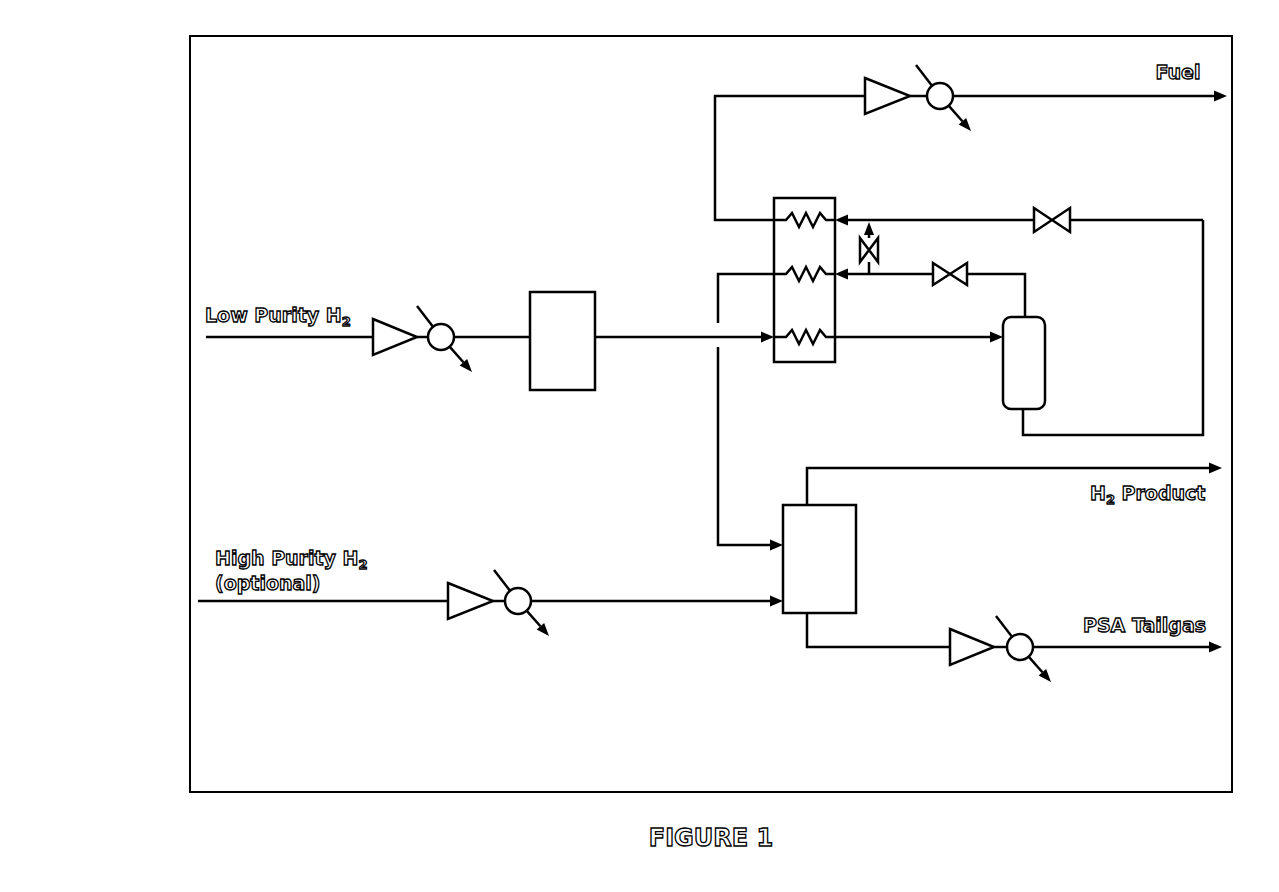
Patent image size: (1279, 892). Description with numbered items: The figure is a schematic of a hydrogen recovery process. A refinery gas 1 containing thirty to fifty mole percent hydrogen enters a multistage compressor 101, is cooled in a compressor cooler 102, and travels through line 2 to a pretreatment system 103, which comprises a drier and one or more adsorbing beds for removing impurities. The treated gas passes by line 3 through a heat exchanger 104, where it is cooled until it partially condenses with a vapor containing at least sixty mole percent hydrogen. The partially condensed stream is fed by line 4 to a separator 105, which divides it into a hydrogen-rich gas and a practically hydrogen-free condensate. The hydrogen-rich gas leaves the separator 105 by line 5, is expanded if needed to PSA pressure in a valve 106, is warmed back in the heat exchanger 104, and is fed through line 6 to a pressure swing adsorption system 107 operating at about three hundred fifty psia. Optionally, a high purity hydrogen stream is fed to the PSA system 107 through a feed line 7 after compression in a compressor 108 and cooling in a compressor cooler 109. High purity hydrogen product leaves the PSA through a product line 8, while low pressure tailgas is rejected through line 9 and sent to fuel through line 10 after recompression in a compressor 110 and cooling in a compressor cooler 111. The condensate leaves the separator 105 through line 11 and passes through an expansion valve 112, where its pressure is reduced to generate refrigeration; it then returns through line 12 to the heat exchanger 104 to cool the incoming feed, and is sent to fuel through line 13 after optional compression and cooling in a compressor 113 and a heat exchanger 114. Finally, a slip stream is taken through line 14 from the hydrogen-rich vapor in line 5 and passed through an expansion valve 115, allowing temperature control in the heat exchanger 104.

The refinery gas 1 is at (233, 342).
The line 2 is at (508, 335).
The line 3 is at (640, 333).
The line 4 is at (895, 335).
The line 5 is at (1027, 298).
The line 6 is at (715, 445).
The feed line 7 is at (348, 603).
The product line 8 is at (965, 470).
The line 9 is at (888, 649).
The line 10 is at (1123, 648).
The line 11 is at (1108, 433).
The line 12 is at (950, 218).
The line 13 is at (1142, 100).
The line 14 is at (875, 268).
The multistage compressor 101 is at (398, 348).
The compressor cooler 102 is at (442, 352).
The pretreatment system 103 is at (577, 352).
The heat exchanger 104 is at (790, 319).
The separator 105 is at (1008, 374).
The valve 106 is at (942, 280).
The pressure swing adsorption system 107 is at (803, 565).
The compressor 108 is at (470, 617).
The compressor cooler 109 is at (515, 618).
The compressor 110 is at (973, 662).
The compressor cooler 111 is at (1018, 658).
The expansion valve 112 is at (1042, 230).
The compressor 113 is at (892, 108).
The heat exchanger 114 is at (940, 112).
The expansion valve 115 is at (882, 242).